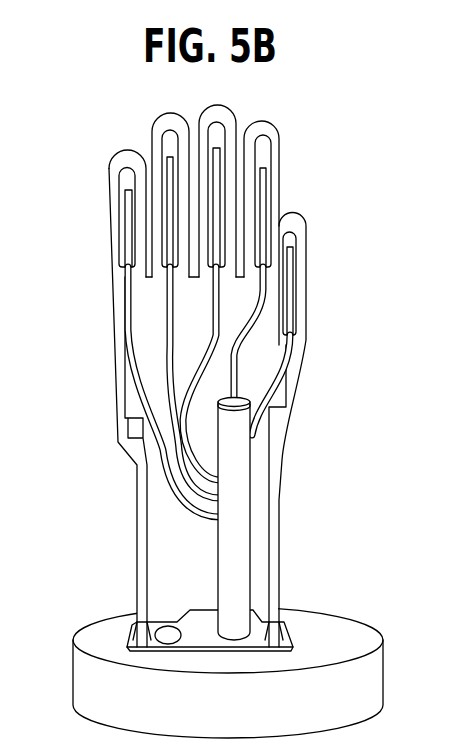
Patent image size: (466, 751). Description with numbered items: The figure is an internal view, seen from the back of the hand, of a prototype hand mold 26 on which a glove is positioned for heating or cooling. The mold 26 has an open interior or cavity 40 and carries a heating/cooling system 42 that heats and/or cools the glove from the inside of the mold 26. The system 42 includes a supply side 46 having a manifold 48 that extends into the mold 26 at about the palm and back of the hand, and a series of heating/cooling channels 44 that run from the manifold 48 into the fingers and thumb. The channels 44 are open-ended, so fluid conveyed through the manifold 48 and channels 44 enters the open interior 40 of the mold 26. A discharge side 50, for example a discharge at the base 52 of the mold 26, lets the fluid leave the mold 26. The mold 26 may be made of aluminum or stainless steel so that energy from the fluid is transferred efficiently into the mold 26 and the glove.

The hand mold 26 is at (340, 302).
The open interior 40 is at (195, 322).
The heating/cooling channels 44 is at (127, 368).
The heating/cooling system 42 is at (278, 453).
The manifold 48 is at (233, 558).
The supply side 46 is at (268, 618).
The discharge side 50 is at (118, 630).
The base 52 is at (143, 647).